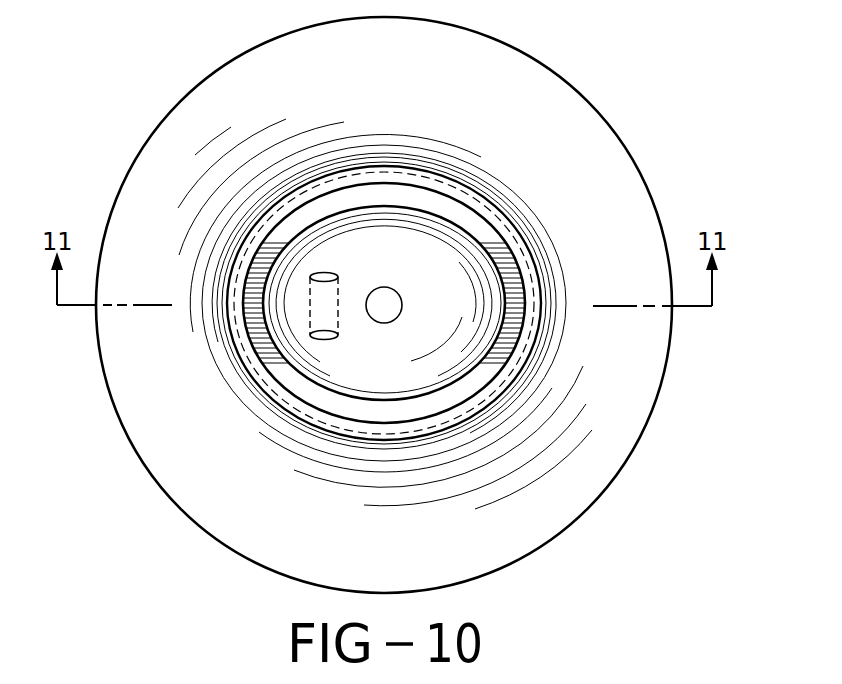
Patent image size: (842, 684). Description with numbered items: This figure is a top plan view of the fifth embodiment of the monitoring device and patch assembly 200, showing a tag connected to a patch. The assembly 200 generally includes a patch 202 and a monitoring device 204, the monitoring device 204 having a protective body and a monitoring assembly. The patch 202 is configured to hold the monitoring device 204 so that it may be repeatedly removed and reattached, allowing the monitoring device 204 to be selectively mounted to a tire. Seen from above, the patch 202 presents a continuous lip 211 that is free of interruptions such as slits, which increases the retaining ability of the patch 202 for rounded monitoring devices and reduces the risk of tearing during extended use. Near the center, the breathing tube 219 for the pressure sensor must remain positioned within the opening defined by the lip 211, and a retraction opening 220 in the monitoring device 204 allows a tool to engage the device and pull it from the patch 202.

The monitoring device and patch assembly 200 is at (403, 296).
The patch 202 is at (623, 443).
The monitoring device 204 is at (437, 268).
The continuous lip 211 is at (327, 404).
The breathing tube 219 is at (390, 310).
The retraction opening 220 is at (323, 338).